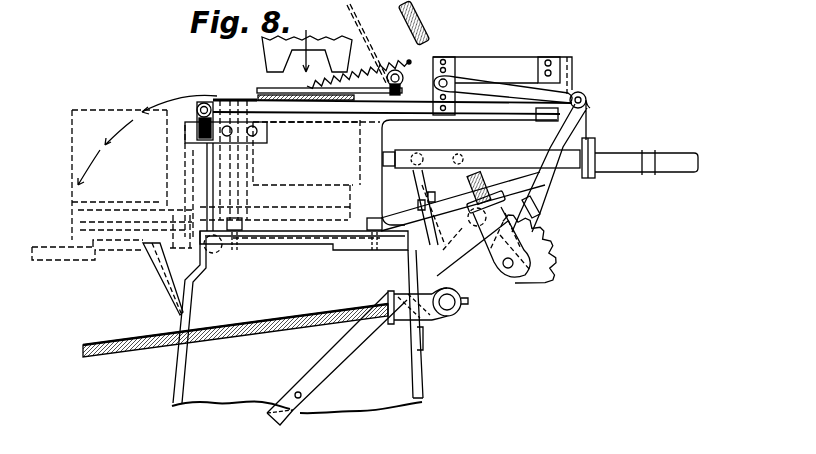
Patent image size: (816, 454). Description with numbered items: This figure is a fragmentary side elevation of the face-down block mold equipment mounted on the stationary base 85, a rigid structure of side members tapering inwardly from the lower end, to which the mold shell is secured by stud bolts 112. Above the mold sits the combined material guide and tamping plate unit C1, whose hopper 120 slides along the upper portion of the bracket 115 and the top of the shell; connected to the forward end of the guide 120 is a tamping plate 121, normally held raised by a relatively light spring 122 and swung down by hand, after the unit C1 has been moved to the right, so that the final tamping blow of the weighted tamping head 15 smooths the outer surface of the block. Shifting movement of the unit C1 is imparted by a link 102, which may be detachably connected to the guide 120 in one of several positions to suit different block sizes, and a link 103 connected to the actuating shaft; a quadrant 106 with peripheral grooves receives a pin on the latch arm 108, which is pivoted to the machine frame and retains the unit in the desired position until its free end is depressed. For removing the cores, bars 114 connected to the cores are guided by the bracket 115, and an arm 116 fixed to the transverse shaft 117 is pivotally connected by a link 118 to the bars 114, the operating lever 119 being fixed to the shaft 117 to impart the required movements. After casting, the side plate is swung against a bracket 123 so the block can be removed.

The weighted tamping head 15 is at (270, 48).
The tamping plate 121 is at (268, 88).
The spring 122 is at (349, 83).
The combined material guide and tamping plate unit C1 is at (533, 60).
The material guide or hopper 120 is at (431, 62).
The link 102 is at (483, 88).
The link 103 is at (540, 190).
The bracket 115 is at (598, 143).
The bar 114 is at (610, 162).
The link 118 is at (450, 152).
The quadrant 106 is at (560, 249).
The arm 116 is at (455, 255).
The transverse shaft 117 is at (449, 302).
The operating lever 119 is at (133, 347).
The arm 108 is at (333, 360).
The stationary base 85 is at (397, 398).
The stud bolt 112 is at (375, 222).
The bracket 123 is at (147, 270).